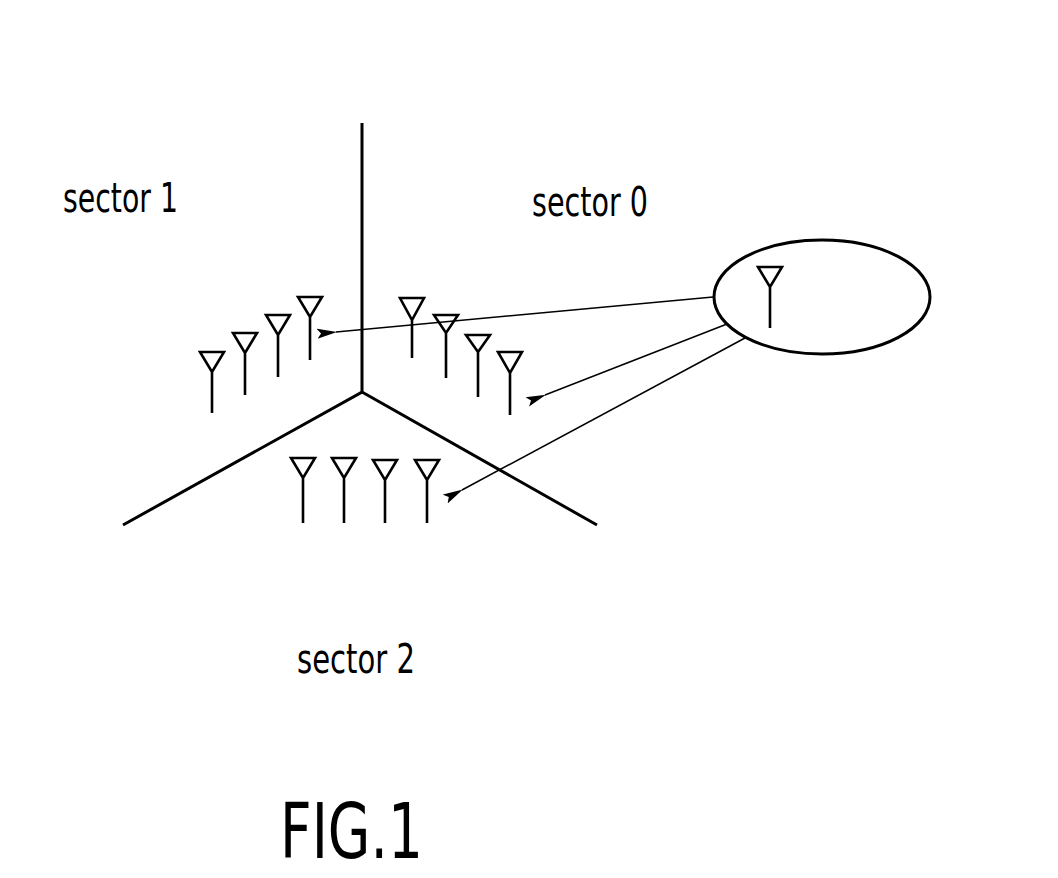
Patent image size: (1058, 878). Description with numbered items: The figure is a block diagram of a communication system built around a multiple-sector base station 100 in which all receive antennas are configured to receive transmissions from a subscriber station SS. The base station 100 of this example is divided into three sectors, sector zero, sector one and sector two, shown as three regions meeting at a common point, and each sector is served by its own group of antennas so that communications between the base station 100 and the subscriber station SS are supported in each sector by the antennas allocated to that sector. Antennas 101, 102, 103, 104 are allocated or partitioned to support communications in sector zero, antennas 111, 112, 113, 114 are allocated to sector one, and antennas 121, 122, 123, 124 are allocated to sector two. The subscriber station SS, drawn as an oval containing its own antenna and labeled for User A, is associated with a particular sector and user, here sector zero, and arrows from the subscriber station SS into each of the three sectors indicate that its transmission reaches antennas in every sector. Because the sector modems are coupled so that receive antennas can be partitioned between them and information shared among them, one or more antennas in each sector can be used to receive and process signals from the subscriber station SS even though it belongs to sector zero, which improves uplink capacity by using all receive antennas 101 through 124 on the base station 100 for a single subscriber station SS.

The multiple-sector base station 100 is at (552, 52).
The antenna 101 is at (415, 298).
The antenna 102 is at (453, 315).
The antenna 103 is at (482, 335).
The antenna 104 is at (515, 352).
The antenna 111 is at (208, 351).
The antenna 112 is at (243, 333).
The antenna 113 is at (277, 315).
The antenna 114 is at (312, 297).
The antenna 121 is at (303, 507).
The antenna 122 is at (344, 515).
The antenna 123 is at (385, 517).
The antenna 124 is at (427, 508).
The subscriber station SS is at (822, 240).